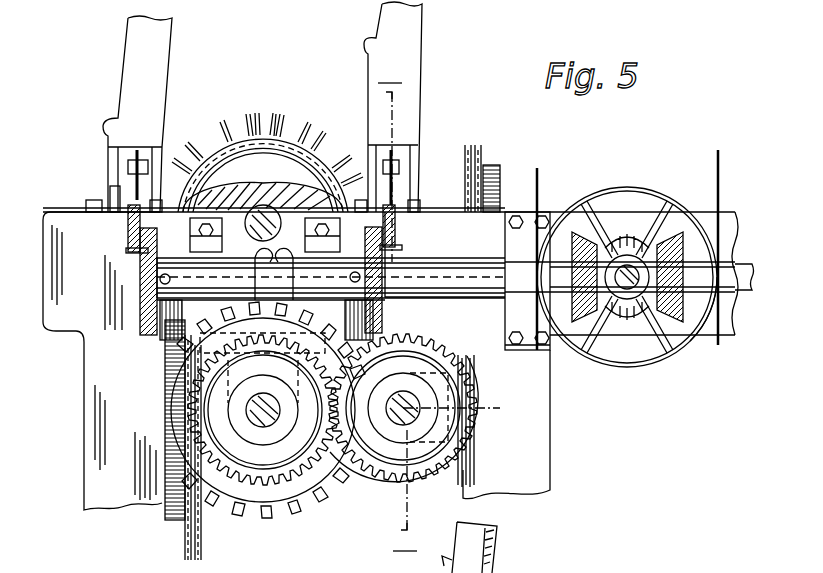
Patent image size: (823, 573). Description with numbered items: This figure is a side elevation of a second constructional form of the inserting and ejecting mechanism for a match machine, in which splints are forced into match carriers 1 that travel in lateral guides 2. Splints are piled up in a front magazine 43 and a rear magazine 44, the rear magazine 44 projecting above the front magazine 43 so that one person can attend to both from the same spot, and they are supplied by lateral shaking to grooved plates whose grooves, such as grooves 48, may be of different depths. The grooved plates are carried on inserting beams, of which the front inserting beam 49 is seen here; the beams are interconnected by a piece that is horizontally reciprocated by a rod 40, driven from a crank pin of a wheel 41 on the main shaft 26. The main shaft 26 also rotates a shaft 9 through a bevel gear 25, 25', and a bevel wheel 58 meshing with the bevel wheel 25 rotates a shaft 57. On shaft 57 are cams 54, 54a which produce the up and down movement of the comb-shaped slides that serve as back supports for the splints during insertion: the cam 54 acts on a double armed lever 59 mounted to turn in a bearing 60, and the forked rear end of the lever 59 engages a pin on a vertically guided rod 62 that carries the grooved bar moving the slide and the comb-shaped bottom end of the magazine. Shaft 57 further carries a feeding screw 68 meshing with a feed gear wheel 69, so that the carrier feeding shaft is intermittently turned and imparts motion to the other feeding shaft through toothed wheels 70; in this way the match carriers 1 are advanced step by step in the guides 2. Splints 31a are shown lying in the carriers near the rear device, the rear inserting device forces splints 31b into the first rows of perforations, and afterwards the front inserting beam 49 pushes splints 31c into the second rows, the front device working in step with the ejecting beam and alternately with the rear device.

The match carrier 1 is at (228, 158).
The lateral guides 2 is at (245, 145).
The shaft 9 is at (746, 268).
The bevel gear 25 is at (627, 300).
The bevel gear 25' is at (699, 333).
The main shaft 26 is at (630, 270).
The rack 31a is at (492, 172).
The splints 31b is at (278, 130).
The splints 31c is at (172, 512).
The rod 40 is at (436, 255).
The wheel 41 is at (720, 232).
The front magazine 43 is at (148, 108).
The rear magazine 44 is at (410, 120).
The grooves 48 is at (260, 418).
The inserting beam 49 is at (300, 182).
The cam 54 is at (150, 266).
The cam 54a is at (378, 270).
The shaft 57 is at (476, 276).
The bevel wheel 58 is at (600, 228).
The double armed lever 59 is at (133, 224).
The bearing 60 is at (108, 192).
The vertically guided rod 62 is at (130, 172).
The feeding screw 68 is at (190, 308).
The feed gear wheel 69 is at (267, 492).
The toothed wheels 70 is at (403, 408).